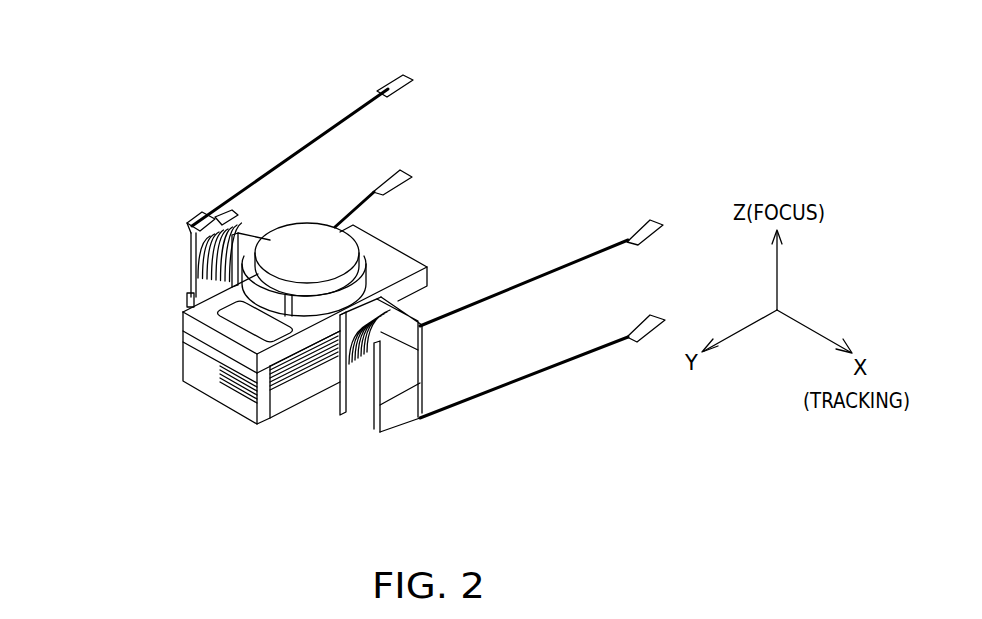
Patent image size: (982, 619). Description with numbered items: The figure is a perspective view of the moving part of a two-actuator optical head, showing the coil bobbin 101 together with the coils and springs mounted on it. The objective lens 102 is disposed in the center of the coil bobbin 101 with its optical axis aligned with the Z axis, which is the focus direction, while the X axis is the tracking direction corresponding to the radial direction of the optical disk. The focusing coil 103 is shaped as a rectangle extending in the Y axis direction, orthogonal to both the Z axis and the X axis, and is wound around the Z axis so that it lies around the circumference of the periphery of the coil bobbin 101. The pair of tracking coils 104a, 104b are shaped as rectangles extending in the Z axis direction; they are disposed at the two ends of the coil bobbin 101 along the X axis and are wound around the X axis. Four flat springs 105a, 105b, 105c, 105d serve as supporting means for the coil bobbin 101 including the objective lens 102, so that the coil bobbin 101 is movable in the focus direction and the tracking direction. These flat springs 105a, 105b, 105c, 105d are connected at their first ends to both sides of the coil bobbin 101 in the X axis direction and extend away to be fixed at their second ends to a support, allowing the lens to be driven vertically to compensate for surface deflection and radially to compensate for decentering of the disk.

The coil bobbin 101 is at (408, 267).
The objective lens 102 is at (307, 250).
The focusing coil 103 is at (202, 363).
The tracking coil 104a is at (357, 380).
The tracking coil 104b is at (202, 290).
The flat spring 105a is at (517, 280).
The flat spring 105b is at (530, 377).
The flat spring 105c is at (338, 224).
The flat spring 105d is at (295, 157).